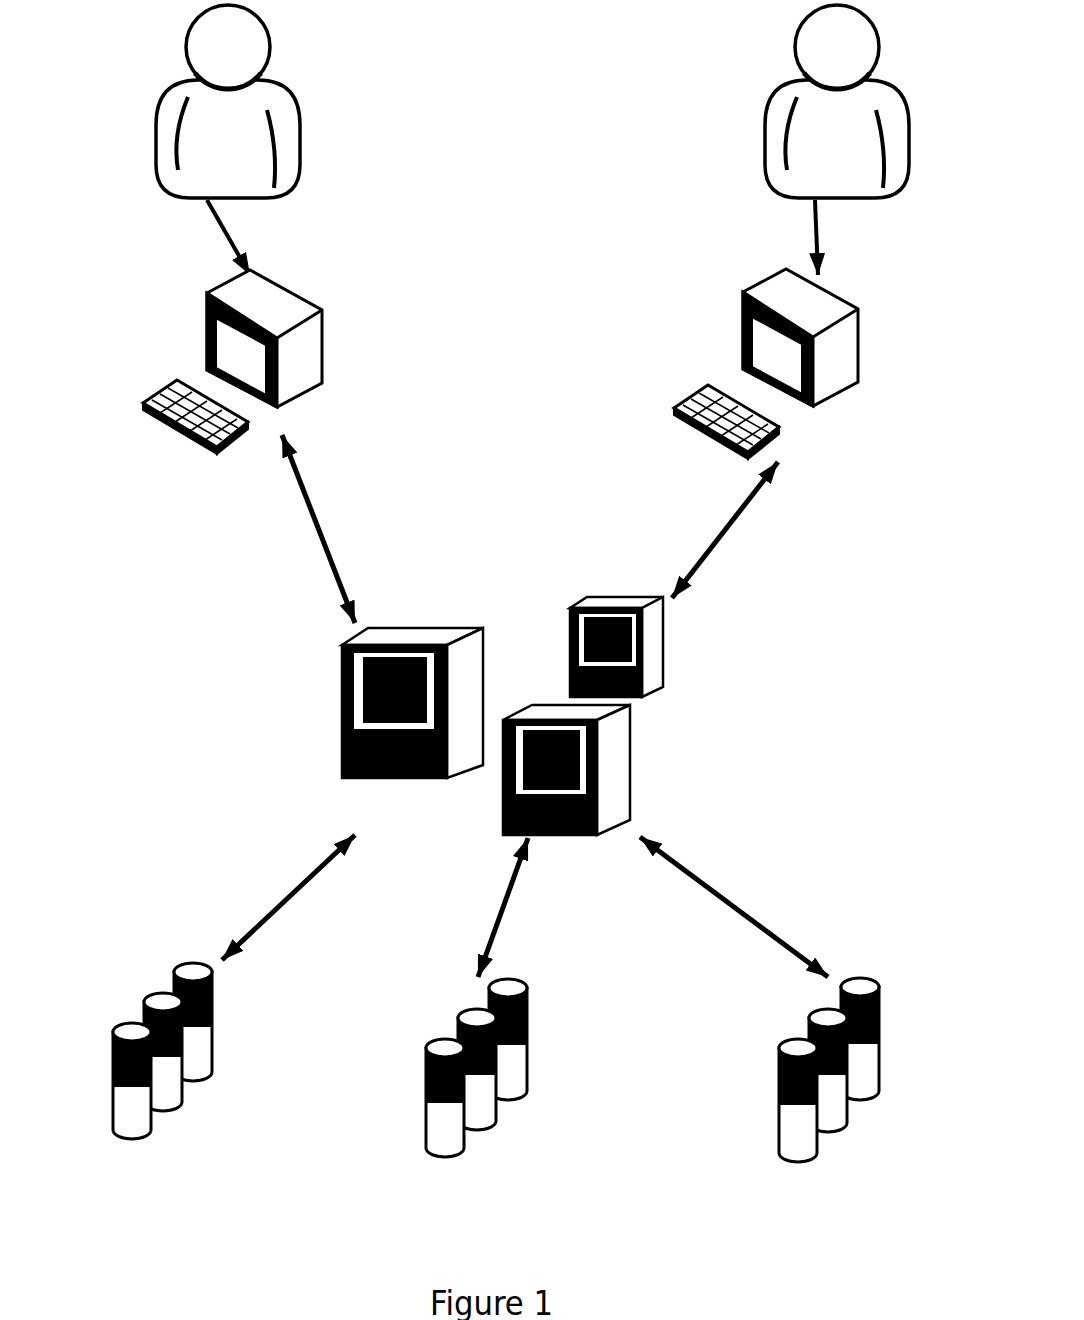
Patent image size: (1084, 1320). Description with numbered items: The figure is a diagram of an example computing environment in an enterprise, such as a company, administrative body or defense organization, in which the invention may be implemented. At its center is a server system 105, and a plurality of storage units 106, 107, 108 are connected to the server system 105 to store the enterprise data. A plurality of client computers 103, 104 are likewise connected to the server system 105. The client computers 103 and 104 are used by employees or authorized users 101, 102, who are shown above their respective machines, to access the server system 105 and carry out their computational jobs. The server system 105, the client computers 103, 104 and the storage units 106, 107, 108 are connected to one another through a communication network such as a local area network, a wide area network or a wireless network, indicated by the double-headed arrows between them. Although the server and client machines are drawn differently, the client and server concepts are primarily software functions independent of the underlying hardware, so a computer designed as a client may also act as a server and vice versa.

The authorized user 101 is at (320, 107).
The authorized user 102 is at (733, 98).
The client computer 103 is at (355, 298).
The client computer 104 is at (705, 332).
The server system 105 is at (328, 735).
The storage unit 106 is at (197, 1118).
The storage unit 107 is at (502, 1138).
The storage unit 108 is at (762, 1123).